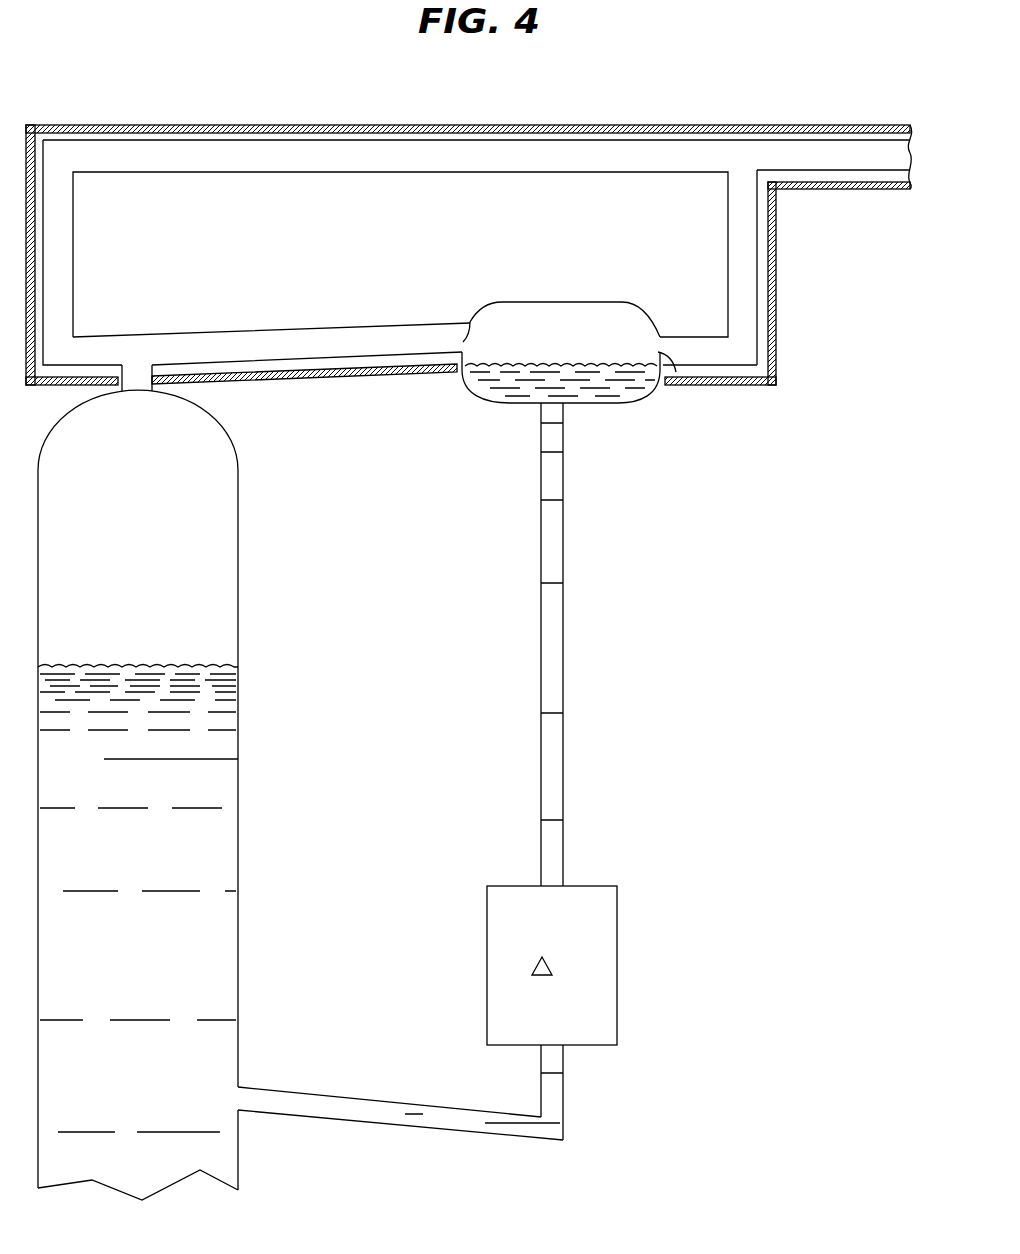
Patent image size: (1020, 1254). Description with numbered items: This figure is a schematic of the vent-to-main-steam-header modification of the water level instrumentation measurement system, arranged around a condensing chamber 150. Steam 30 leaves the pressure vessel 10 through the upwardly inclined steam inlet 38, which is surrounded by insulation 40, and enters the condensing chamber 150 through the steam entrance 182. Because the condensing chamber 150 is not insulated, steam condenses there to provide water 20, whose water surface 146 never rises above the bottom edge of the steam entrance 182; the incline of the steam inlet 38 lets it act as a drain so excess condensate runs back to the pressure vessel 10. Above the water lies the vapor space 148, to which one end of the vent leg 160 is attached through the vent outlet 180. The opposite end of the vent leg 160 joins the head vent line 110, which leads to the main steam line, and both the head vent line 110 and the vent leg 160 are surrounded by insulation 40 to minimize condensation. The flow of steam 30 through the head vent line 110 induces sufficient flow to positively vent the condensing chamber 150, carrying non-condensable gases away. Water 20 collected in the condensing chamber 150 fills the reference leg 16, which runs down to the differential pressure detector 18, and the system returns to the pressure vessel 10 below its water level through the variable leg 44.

The pressure vessel 10 is at (238, 508).
The reference leg 16 is at (565, 700).
The differential pressure detector 18 is at (487, 945).
The water 20 is at (496, 386).
The steam 30 is at (151, 576).
The steam inlet 38 is at (283, 330).
The insulation 40 is at (268, 125).
The variable leg 44 is at (372, 1125).
The head vent line 110 is at (442, 152).
The water surface 146 is at (546, 365).
The vapor space 148 is at (593, 315).
The condensing chamber 150 is at (560, 302).
The vent leg 160 is at (758, 258).
The vent outlet 180 is at (673, 378).
The steam entrance 182 is at (467, 343).